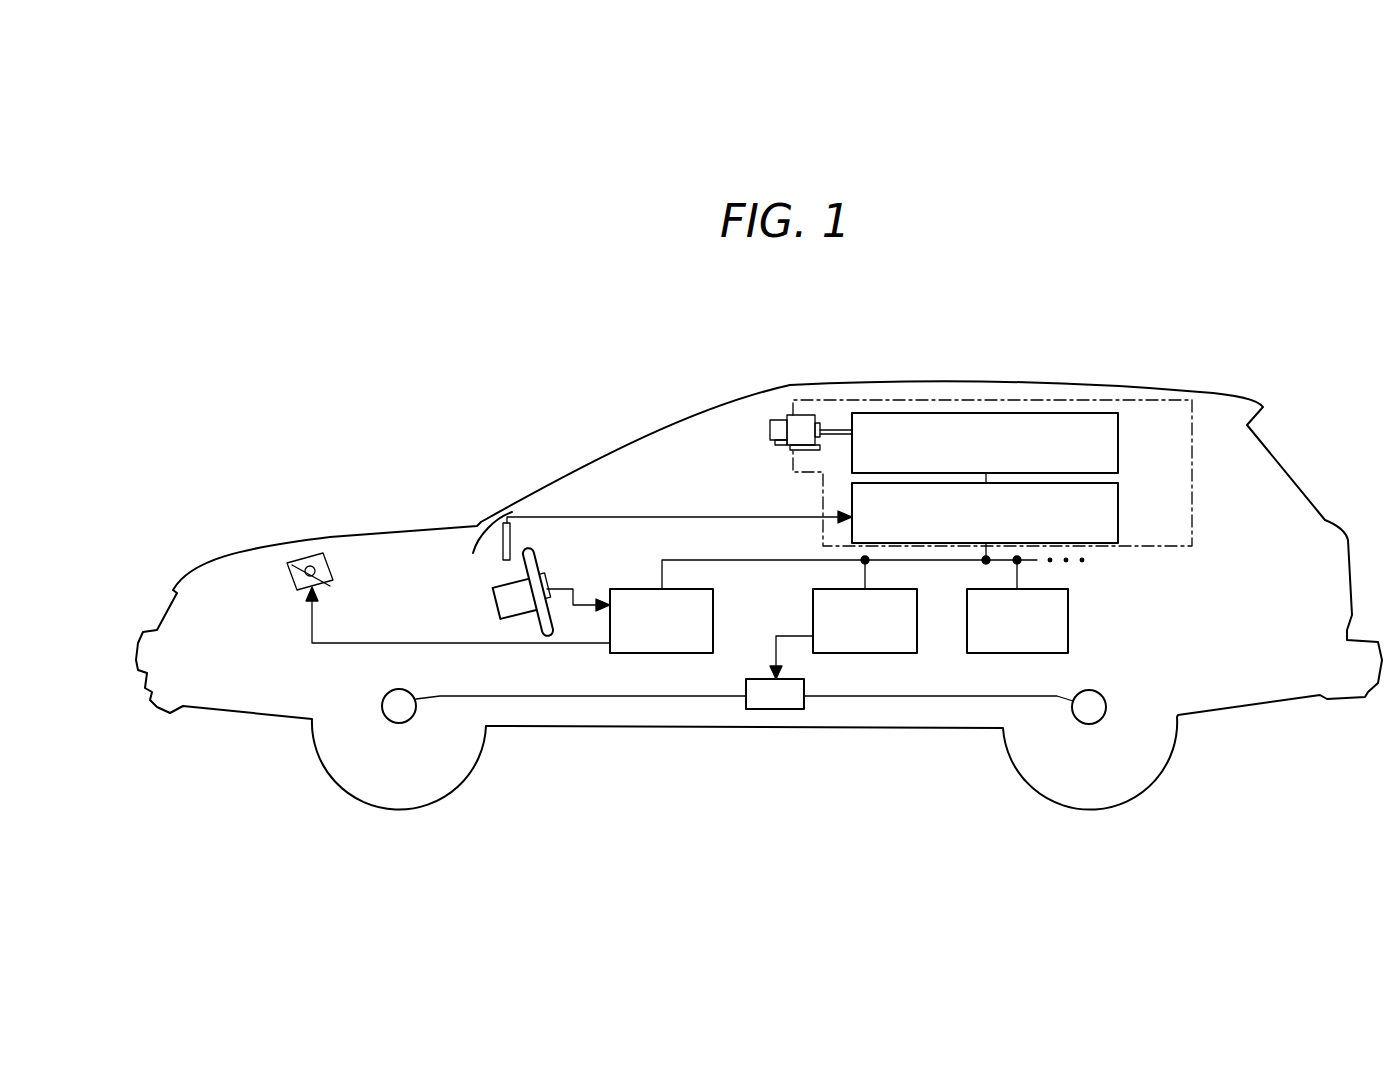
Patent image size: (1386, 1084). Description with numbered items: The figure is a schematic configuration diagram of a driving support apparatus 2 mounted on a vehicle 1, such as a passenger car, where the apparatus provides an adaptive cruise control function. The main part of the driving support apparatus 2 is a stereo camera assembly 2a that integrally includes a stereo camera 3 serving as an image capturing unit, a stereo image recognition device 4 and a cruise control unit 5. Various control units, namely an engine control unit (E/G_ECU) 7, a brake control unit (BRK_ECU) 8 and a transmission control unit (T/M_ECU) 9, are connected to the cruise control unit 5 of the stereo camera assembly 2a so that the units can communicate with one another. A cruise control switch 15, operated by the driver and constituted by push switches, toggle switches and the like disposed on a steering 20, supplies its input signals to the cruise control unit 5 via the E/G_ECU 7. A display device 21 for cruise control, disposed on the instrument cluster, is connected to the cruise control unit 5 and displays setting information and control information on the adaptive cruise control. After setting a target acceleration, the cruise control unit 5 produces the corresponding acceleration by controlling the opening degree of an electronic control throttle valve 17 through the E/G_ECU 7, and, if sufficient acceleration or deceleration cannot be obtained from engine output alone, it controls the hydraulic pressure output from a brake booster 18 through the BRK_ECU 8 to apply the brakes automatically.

The vehicle 1 is at (1222, 314).
The driving support apparatus 2 is at (1010, 430).
The stereo camera assembly 2a is at (1193, 472).
The stereo camera 3 is at (812, 405).
The stereo image recognition device 4 is at (1120, 430).
The cruise control unit 5 is at (1120, 500).
The engine control unit (E/G_ECU) 7 is at (697, 586).
The brake control unit (BRK_ECU) 8 is at (902, 584).
The transmission control unit (T/M_ECU) 9 is at (1057, 585).
The cruise control switch 15 is at (547, 580).
The electronic control throttle valve 17 is at (328, 557).
The brake booster 18 is at (795, 676).
The steering 20 is at (551, 612).
The display device 21 is at (500, 543).